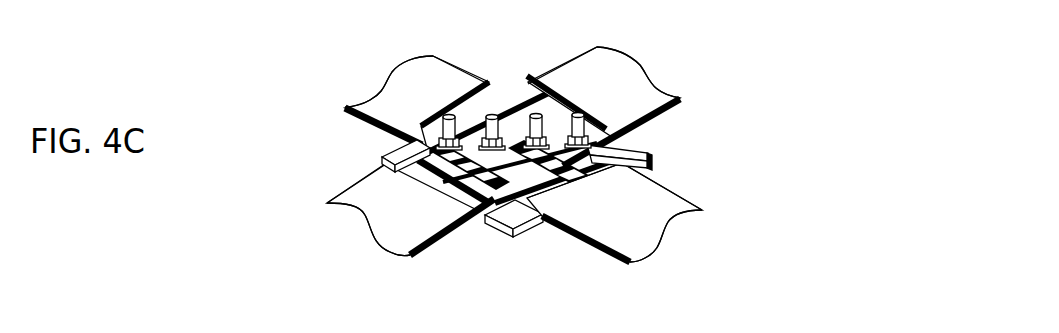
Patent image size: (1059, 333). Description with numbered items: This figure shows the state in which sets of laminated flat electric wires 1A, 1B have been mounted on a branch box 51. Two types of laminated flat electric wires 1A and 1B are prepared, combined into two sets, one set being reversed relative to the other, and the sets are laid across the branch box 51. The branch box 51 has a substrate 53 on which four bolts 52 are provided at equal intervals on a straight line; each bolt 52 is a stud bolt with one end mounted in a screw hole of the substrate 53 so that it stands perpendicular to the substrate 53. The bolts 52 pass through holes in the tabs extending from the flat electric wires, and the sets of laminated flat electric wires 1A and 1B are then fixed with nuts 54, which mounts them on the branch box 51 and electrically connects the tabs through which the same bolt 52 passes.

The laminated flat electric wire 1A is at (415, 232).
The laminated flat electric wire 1B is at (415, 84).
The branch box 51 is at (476, 277).
The bolt 52 is at (580, 123).
The substrate 53 is at (517, 227).
The nut 54 is at (595, 149).